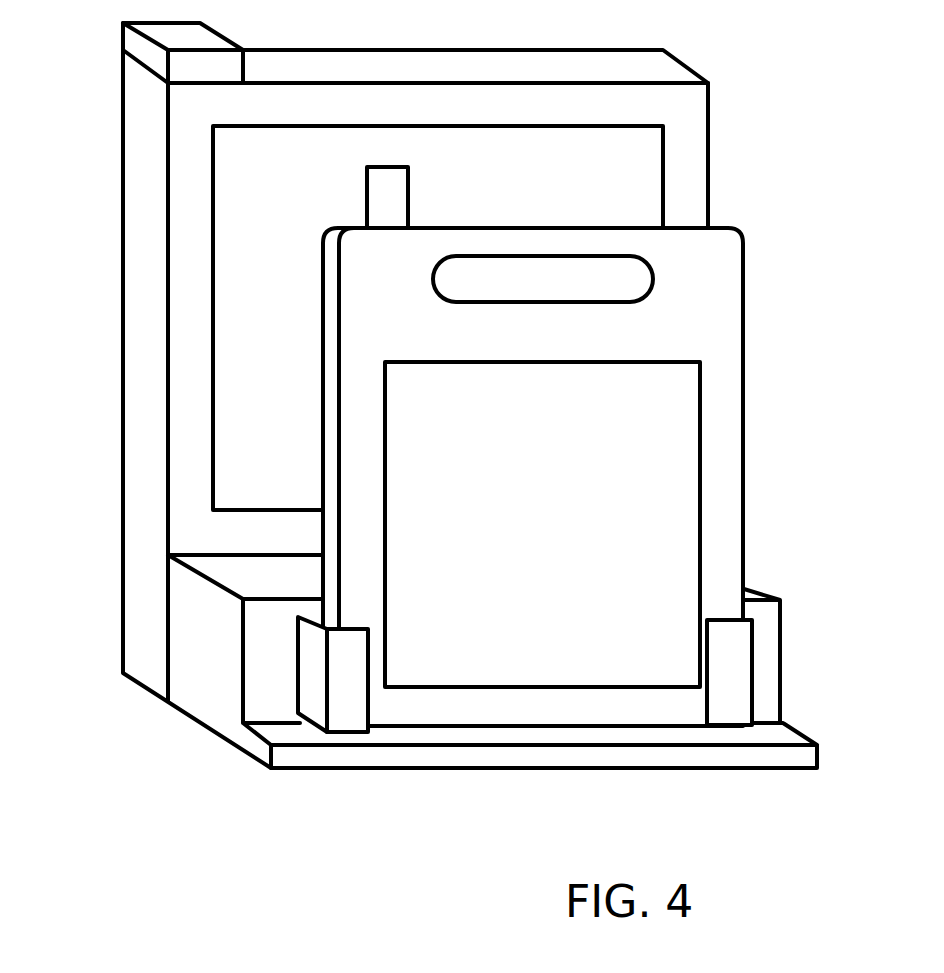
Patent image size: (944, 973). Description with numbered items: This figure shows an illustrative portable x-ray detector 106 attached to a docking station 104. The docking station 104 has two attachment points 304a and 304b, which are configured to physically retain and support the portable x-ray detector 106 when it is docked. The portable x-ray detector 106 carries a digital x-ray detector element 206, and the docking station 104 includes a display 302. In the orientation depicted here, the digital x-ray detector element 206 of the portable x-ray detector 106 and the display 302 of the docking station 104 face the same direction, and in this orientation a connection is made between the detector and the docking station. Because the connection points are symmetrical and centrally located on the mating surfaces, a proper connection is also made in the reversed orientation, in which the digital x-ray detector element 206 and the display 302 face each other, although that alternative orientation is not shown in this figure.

The docking station 104 is at (145, 311).
The display 302 is at (663, 157).
The portable x-ray detector 106 is at (743, 370).
The digital x-ray detector element 206 is at (678, 495).
The attachment point 304a is at (345, 732).
The attachment point 304b is at (735, 713).